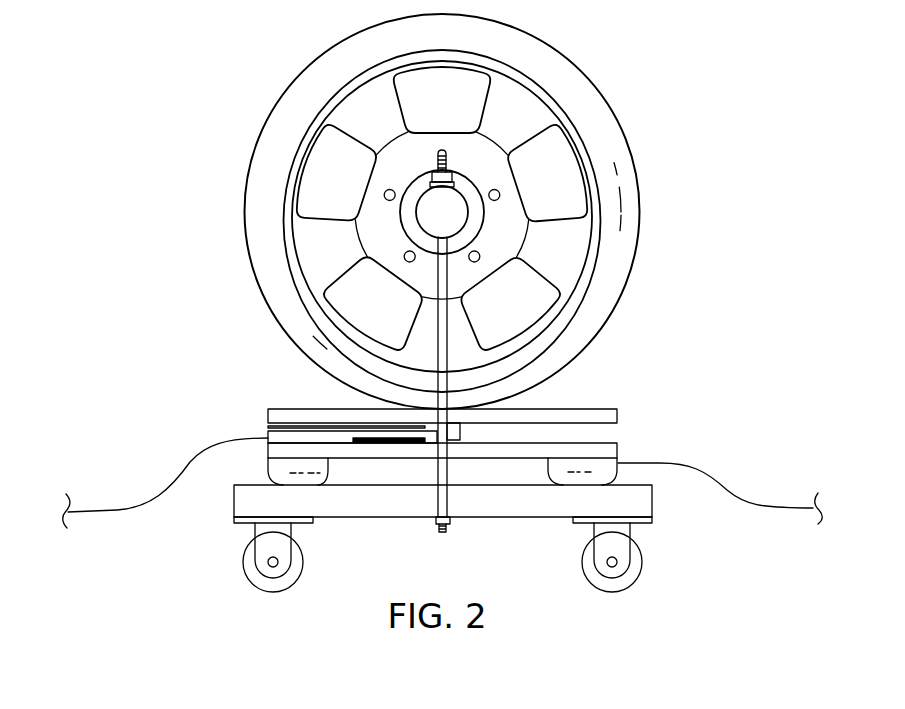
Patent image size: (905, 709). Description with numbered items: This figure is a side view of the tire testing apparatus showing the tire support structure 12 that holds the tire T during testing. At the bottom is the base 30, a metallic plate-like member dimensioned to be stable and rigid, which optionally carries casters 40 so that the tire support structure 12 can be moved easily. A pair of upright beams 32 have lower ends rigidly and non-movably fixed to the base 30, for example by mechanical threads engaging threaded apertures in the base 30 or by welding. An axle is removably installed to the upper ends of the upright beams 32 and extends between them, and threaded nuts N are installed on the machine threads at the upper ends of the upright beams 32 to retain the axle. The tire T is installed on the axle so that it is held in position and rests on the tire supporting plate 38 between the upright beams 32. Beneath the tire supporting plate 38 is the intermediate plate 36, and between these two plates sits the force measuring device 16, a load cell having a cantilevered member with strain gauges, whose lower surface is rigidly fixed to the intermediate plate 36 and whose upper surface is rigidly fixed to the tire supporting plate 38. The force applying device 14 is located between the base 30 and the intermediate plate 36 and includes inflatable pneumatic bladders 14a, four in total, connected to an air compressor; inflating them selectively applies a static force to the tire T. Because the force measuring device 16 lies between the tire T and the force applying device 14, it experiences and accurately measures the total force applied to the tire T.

The tire support structure 12 is at (454, 210).
The tire T is at (283, 126).
The threaded nuts N is at (452, 173).
The upright beams 32 is at (443, 325).
The tire supporting plate 38 is at (553, 416).
The force measuring device 16 is at (295, 438).
The intermediate plate 36 is at (599, 451).
The force applying device 14 is at (443, 515).
The pneumatic bladders 14a is at (325, 464).
The base 30 is at (633, 498).
The casters 40 is at (246, 559).